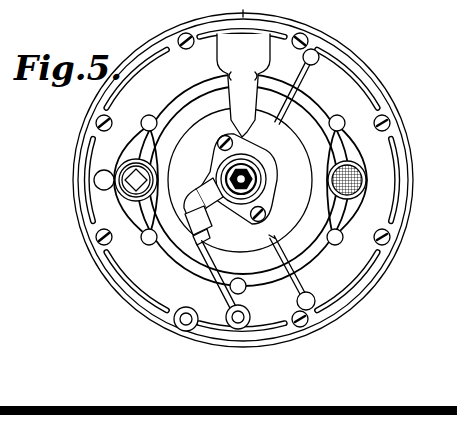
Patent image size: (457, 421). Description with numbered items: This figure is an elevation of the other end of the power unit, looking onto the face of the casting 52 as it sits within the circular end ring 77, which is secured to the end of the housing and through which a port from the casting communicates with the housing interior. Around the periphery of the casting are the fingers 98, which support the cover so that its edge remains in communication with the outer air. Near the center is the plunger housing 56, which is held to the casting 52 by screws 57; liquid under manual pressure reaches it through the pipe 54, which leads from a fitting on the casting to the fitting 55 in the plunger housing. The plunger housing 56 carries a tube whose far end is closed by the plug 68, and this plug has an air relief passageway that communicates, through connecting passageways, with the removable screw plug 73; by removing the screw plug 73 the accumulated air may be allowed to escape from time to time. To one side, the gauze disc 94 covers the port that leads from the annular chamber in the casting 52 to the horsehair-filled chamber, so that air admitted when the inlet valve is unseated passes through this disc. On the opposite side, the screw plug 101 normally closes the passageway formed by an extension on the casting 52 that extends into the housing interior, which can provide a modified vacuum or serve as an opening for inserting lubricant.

The end ring 77 is at (366, 80).
The fingers 98 is at (396, 223).
The casting 52 is at (310, 108).
The screw plug 101 is at (135, 200).
The gauze disc 94 is at (357, 180).
The plunger housing 56 is at (246, 150).
The screws 57 is at (257, 221).
The plug 68 is at (260, 187).
The removable screw plug 73 is at (250, 178).
The fitting 55 is at (205, 212).
The pipe 54 is at (229, 287).